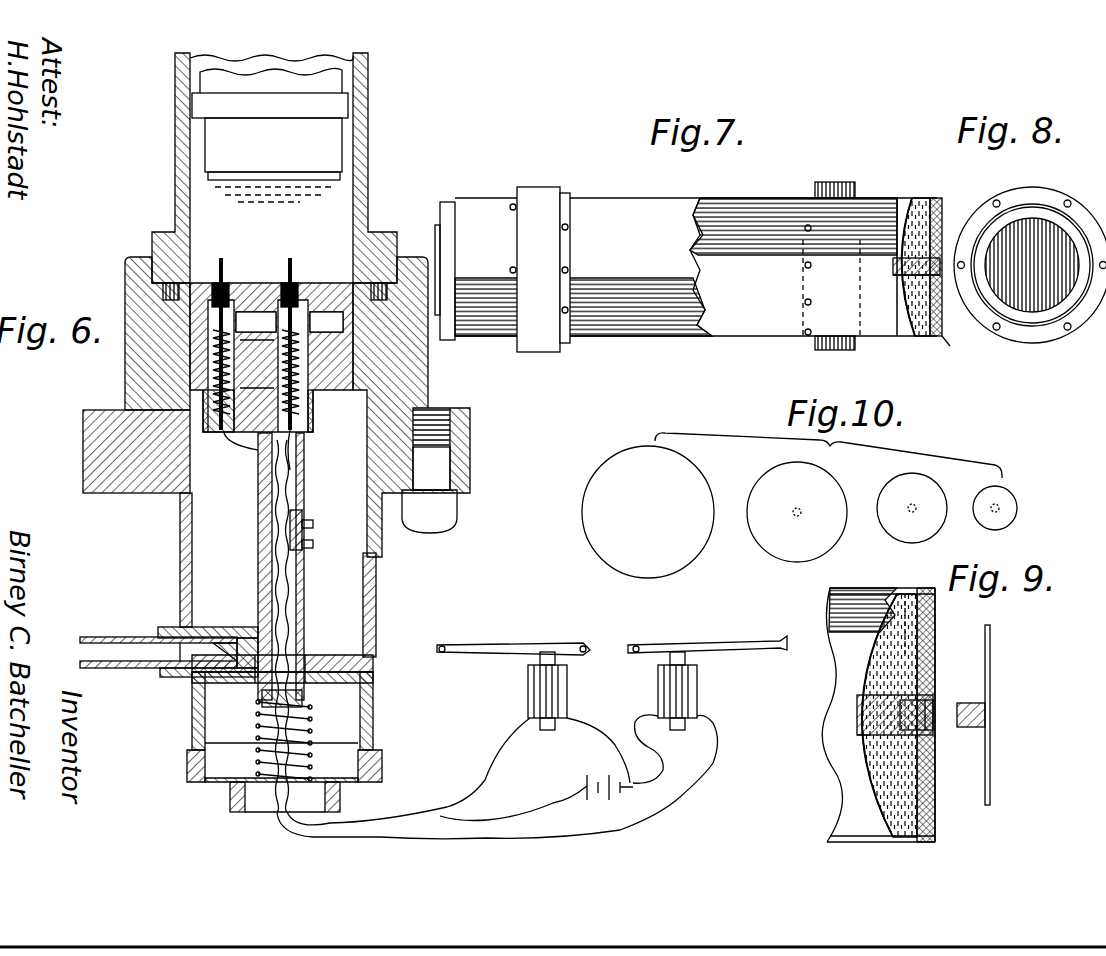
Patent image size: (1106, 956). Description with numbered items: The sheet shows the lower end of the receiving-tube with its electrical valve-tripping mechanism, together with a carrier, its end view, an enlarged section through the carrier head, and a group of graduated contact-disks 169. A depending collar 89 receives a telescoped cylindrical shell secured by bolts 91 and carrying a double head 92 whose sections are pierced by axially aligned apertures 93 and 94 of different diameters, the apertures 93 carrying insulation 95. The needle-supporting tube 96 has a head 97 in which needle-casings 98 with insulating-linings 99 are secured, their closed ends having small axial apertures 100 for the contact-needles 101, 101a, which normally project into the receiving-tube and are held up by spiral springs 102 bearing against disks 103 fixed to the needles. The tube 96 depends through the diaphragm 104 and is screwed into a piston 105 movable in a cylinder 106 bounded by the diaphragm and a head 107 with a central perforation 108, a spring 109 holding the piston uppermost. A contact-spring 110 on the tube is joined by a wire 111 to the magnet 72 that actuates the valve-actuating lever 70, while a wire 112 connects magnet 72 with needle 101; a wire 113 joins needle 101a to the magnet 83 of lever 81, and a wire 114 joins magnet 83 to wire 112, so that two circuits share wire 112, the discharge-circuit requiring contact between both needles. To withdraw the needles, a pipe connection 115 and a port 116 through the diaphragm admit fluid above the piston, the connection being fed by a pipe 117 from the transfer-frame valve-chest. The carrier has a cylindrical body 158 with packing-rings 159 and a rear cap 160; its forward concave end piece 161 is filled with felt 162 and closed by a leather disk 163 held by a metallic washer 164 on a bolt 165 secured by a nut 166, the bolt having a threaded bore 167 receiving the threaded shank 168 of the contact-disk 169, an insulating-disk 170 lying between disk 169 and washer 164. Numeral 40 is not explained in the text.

In FIG. 6, the casing 40 is at (380, 538).
In FIG. 6, the valve-actuating lever 70 is at (520, 645).
In FIG. 6, the magnet 72 is at (567, 694).
In FIG. 6, the valve-actuating lever 81 is at (713, 647).
In FIG. 6, the magnet 83 is at (697, 699).
In FIG. 6, the depending collar 89 is at (372, 157).
In FIG. 6, the bolts 91 is at (429, 471).
In FIG. 6, the double head 92 is at (257, 354).
In FIG. 6, the apertures 93 is at (297, 287).
In FIG. 6, the apertures 94 is at (289, 322).
In FIG. 6, the insulation 95 is at (230, 286).
In FIG. 6, the needle-supporting tube 96 is at (258, 500).
In FIG. 6, the head 97 is at (219, 434).
In FIG. 6, the needle-casings 98 is at (257, 378).
In FIG. 6, the insulating-linings 99 is at (313, 400).
In FIG. 6, the axial apertures 100 is at (300, 440).
In FIG. 6, the contact-needle 101 is at (290, 258).
In FIG. 6, the contact-needle 101a is at (222, 258).
In FIG. 6, the spiral springs 102 is at (177, 370).
In FIG. 6, the disks 103 is at (203, 330).
In FIG. 6, the diaphragm 104 is at (265, 572).
In FIG. 6, the piston 105 is at (282, 711).
In FIG. 6, the cylinder 106 is at (281, 765).
In FIG. 6, the head 107 is at (382, 769).
In FIG. 6, the central perforation 108 is at (275, 813).
In FIG. 6, the spring 109 is at (258, 723).
In FIG. 6, the contact-spring 110 is at (302, 512).
In FIG. 6, the wire 111 is at (300, 605).
In FIG. 6, the wire 112 is at (519, 820).
In FIG. 6, the wire 113 is at (248, 453).
In FIG. 6, the wire 114 is at (660, 769).
In FIG. 6, the pipe connection 115 is at (165, 627).
In FIG. 6, the port 116 is at (218, 640).
In FIG. 6, the pipe 117 is at (95, 637).
In FIG. 6, the cylindrical body part 158 is at (270, 135).
In FIG. 7, the cylindrical body part 158 is at (696, 267).
In FIG. 8, the cylindrical body part 158 is at (1042, 188).
In FIG. 7, the packing-rings 159 is at (536, 195).
In FIG. 7, the cap 160 is at (447, 202).
In FIG. 7, the concave end piece 161 is at (911, 200).
In FIG. 9, the concave end piece 161 is at (880, 644).
In FIG. 7, the felt 162 is at (940, 198).
In FIG. 9, the felt 162 is at (908, 597).
In FIG. 7, the leather disk 163 is at (942, 206).
In FIG. 9, the leather disk 163 is at (935, 601).
In FIG. 7, the metallic washer 164 is at (942, 316).
In FIG. 9, the metallic washer 164 is at (936, 641).
In FIG. 7, the bolt 165 is at (893, 264).
In FIG. 9, the bolt 165 is at (857, 713).
In FIG. 7, the nut 166 is at (896, 276).
In FIG. 9, the nut 166 is at (860, 736).
In FIG. 9, the screw-threaded internal bore 167 is at (935, 705).
In FIG. 9, the screw-threaded shank 168 is at (985, 716).
In FIG. 10, the contact-disk 169 is at (799, 505).
In FIG. 9, the contact-disk 169 is at (990, 651).
In FIG. 9, the insulating-disk 170 is at (936, 783).